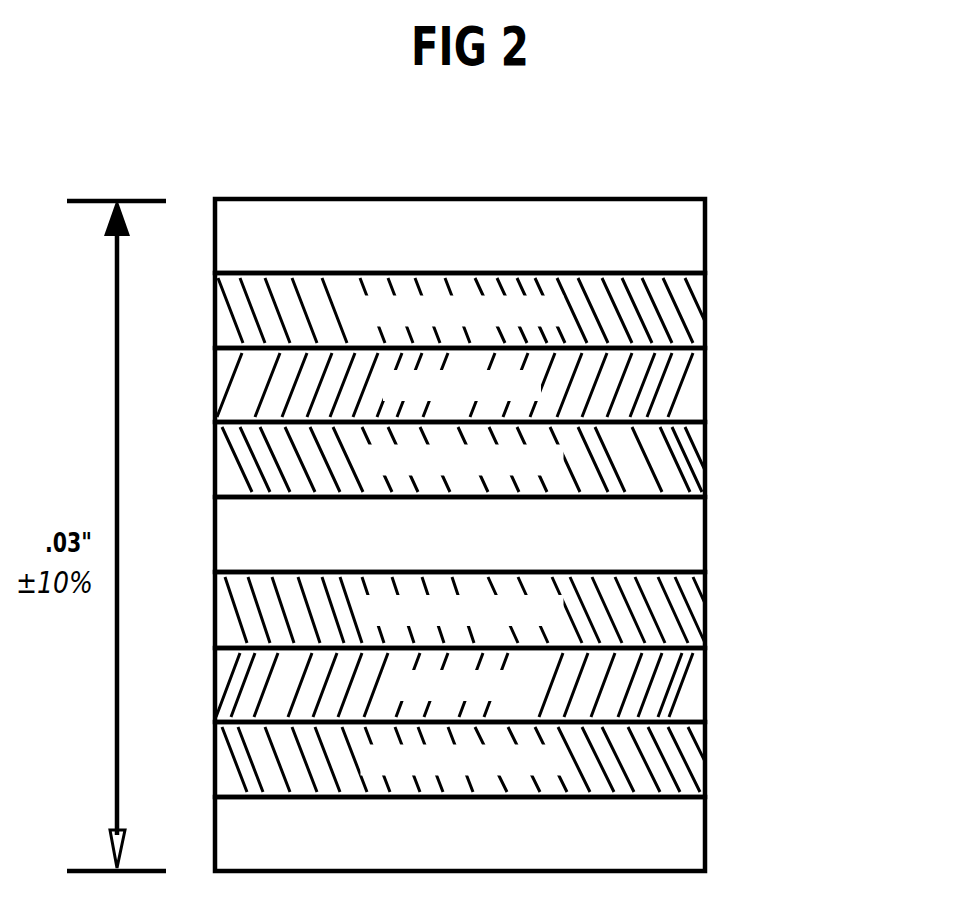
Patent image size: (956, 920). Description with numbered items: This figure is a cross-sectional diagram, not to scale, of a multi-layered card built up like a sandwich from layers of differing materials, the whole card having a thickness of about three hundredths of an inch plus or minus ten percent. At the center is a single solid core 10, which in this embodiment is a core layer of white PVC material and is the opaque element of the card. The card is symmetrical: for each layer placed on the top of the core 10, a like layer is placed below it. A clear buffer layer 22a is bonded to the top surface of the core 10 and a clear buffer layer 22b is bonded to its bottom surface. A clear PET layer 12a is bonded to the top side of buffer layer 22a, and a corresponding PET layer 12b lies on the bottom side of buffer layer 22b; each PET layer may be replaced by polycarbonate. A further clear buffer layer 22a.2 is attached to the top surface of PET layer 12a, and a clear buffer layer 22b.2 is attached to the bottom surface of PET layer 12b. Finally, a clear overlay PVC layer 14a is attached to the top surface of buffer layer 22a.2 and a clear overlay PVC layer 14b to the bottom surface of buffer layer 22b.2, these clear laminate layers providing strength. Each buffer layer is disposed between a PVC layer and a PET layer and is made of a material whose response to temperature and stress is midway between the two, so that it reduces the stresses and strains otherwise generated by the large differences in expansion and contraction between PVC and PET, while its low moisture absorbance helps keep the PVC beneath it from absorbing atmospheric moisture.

The clear overlay PVC layer 14a is at (697, 245).
The clear buffer layer 22a.2 is at (697, 322).
The clear PET layer 12a is at (697, 395).
The clear buffer layer 22a is at (697, 472).
The core layer 10 is at (697, 547).
The clear buffer layer 22b is at (697, 622).
The PET layer 12b is at (697, 697).
The clear buffer layer 22b.2 is at (697, 770).
The clear overlay PVC layer 14b is at (697, 843).